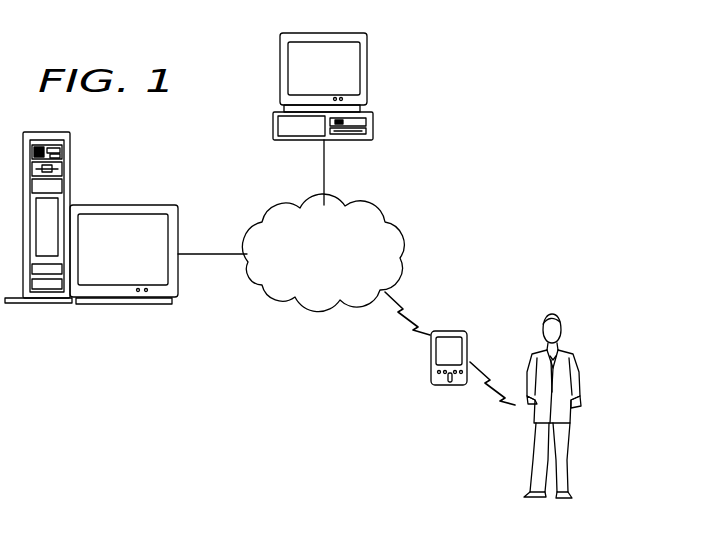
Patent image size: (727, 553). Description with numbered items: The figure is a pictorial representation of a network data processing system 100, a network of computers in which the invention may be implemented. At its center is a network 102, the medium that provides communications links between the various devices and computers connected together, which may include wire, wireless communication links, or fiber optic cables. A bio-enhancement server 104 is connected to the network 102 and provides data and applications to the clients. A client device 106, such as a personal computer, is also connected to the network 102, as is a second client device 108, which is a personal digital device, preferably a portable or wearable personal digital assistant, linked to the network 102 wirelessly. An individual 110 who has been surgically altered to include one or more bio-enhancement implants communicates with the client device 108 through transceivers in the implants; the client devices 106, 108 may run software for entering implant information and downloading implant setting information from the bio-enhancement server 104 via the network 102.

The network data processing system 100 is at (486, 81).
The network 102 is at (352, 206).
The bio-enhancement server 104 is at (124, 205).
The client device 106 is at (367, 70).
The client device 108 is at (449, 331).
The individual 110 is at (580, 375).